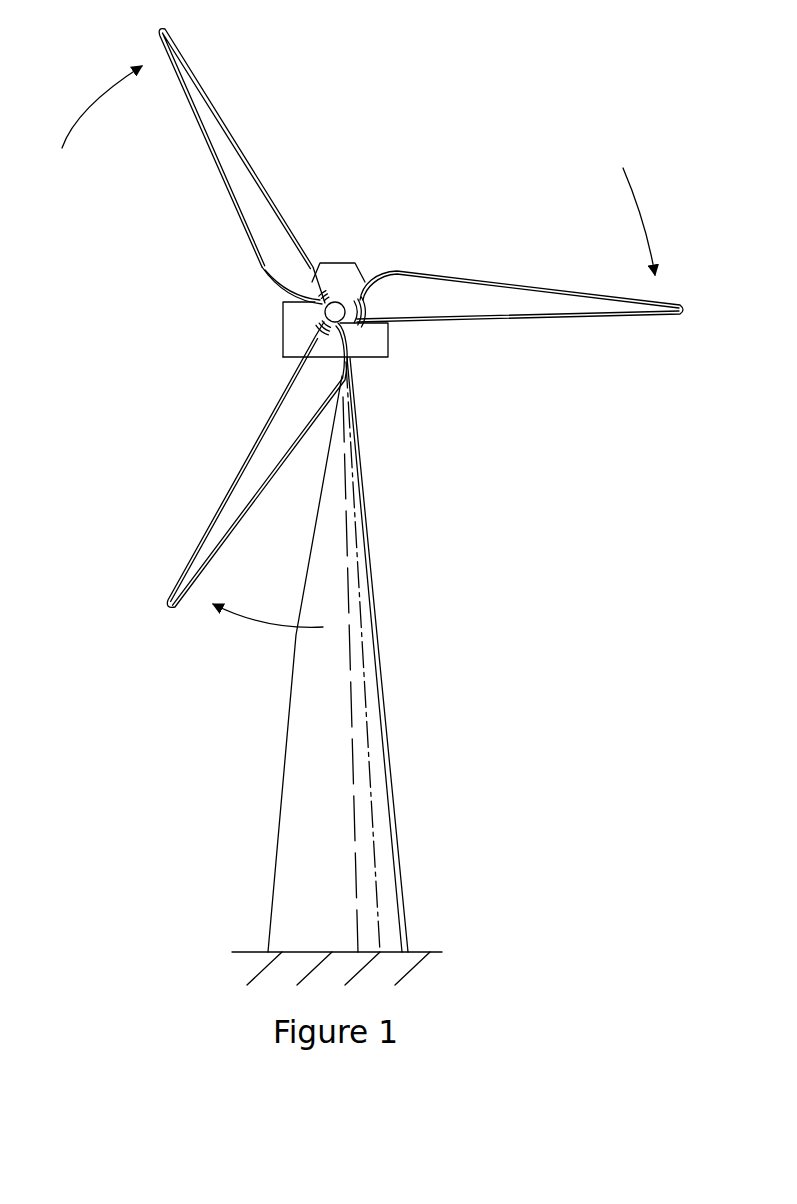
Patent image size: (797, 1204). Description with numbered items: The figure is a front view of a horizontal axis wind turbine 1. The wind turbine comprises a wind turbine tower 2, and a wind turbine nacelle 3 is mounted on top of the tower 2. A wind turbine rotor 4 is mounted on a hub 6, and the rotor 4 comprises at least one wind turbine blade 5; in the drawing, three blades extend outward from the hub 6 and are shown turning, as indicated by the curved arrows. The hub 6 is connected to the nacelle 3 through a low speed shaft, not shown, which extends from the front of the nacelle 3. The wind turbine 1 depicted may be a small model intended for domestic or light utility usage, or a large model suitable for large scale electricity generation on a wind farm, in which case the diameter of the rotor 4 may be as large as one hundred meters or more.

The wind turbine 1 is at (372, 507).
The wind turbine tower 2 is at (388, 695).
The wind turbine nacelle 3 is at (384, 340).
The wind turbine rotor 4 is at (372, 328).
The wind turbine blade 5 is at (505, 289).
The hub 6 is at (339, 308).